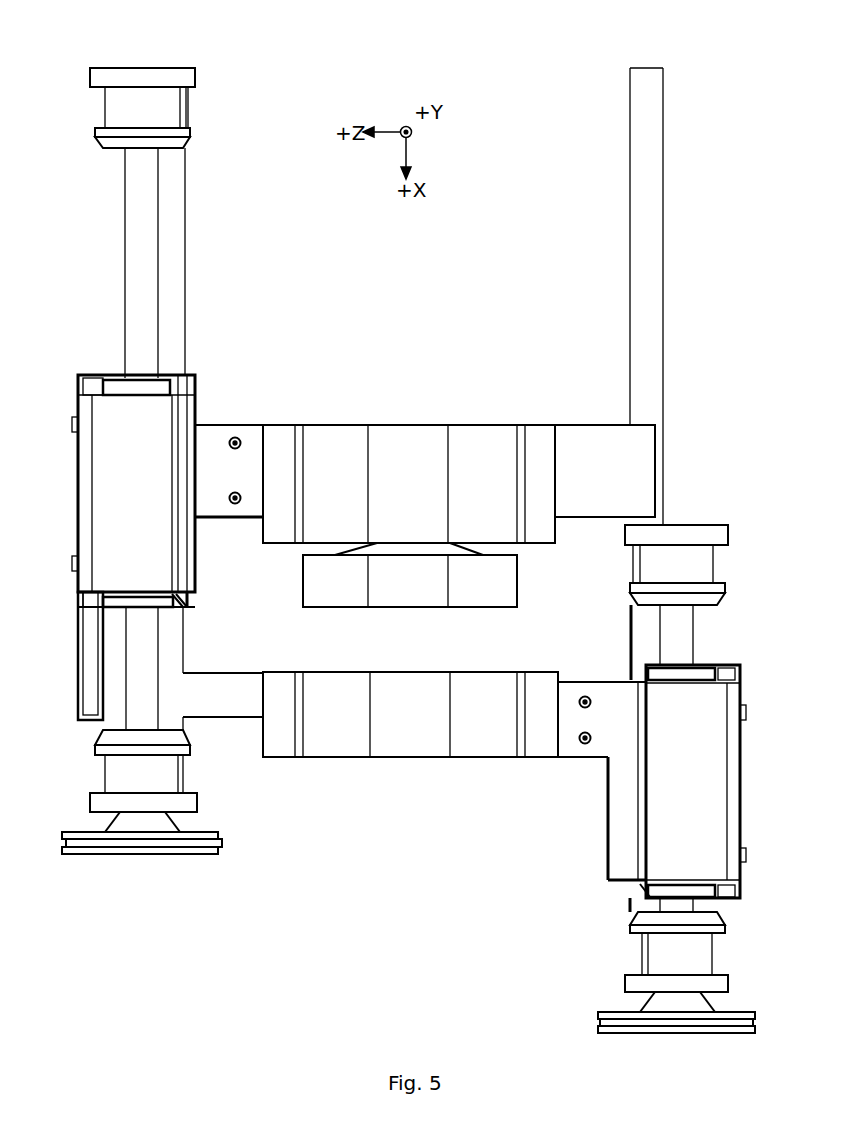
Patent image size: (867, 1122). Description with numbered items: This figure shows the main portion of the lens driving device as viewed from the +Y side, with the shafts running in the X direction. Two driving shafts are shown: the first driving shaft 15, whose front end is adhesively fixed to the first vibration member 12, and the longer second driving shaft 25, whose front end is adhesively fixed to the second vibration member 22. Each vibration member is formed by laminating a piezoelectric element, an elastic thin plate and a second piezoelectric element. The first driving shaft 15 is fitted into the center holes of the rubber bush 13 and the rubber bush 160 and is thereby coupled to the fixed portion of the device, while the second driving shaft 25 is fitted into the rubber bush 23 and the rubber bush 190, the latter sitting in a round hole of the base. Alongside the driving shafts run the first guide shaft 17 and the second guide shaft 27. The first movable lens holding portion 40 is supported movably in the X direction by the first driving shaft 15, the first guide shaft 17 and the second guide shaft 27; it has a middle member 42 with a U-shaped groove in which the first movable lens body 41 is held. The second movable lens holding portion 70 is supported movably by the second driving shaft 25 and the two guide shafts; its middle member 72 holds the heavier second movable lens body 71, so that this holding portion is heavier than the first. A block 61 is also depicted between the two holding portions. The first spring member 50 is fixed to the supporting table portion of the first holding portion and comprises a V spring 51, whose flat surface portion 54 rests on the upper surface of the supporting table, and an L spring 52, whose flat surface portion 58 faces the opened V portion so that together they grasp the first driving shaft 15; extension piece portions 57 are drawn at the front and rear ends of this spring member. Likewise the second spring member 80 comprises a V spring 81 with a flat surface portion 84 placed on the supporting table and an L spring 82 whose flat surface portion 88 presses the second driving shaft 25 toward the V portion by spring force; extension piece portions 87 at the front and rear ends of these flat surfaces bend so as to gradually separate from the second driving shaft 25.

The rubber bush 190 is at (135, 105).
The second guide shaft 27 is at (172, 272).
The first guide shaft 17 is at (643, 280).
The second spring member 80 is at (147, 515).
The L spring 82 is at (125, 418).
The extension piece portion 87 is at (115, 382).
The flat surface portion 88 is at (100, 578).
The V spring 81 is at (205, 443).
The flat surface portion 84 is at (222, 447).
The second movable lens holding portion 70 is at (459, 461).
The second movable lens body 71 is at (405, 448).
The middle member 72 is at (545, 440).
The connecting block 61 is at (405, 598).
The rubber bush 160 is at (690, 563).
The first driving shaft 15 is at (668, 637).
The first movable lens holding portion 40 is at (410, 697).
The first movable lens body 41 is at (400, 705).
The middle member 42 is at (275, 692).
The second driving shaft 25 is at (140, 638).
The rubber bush 23 is at (150, 773).
The second vibration member 22 is at (212, 843).
The first spring member 50 is at (674, 816).
The flat surface portion 58 is at (700, 808).
The clamp plate 57 is at (690, 680).
The flat surface portion 54 is at (600, 725).
The V spring 51 is at (620, 813).
The L spring 52 is at (660, 838).
The rubber bush 13 is at (672, 953).
The first vibration member 12 is at (608, 1023).